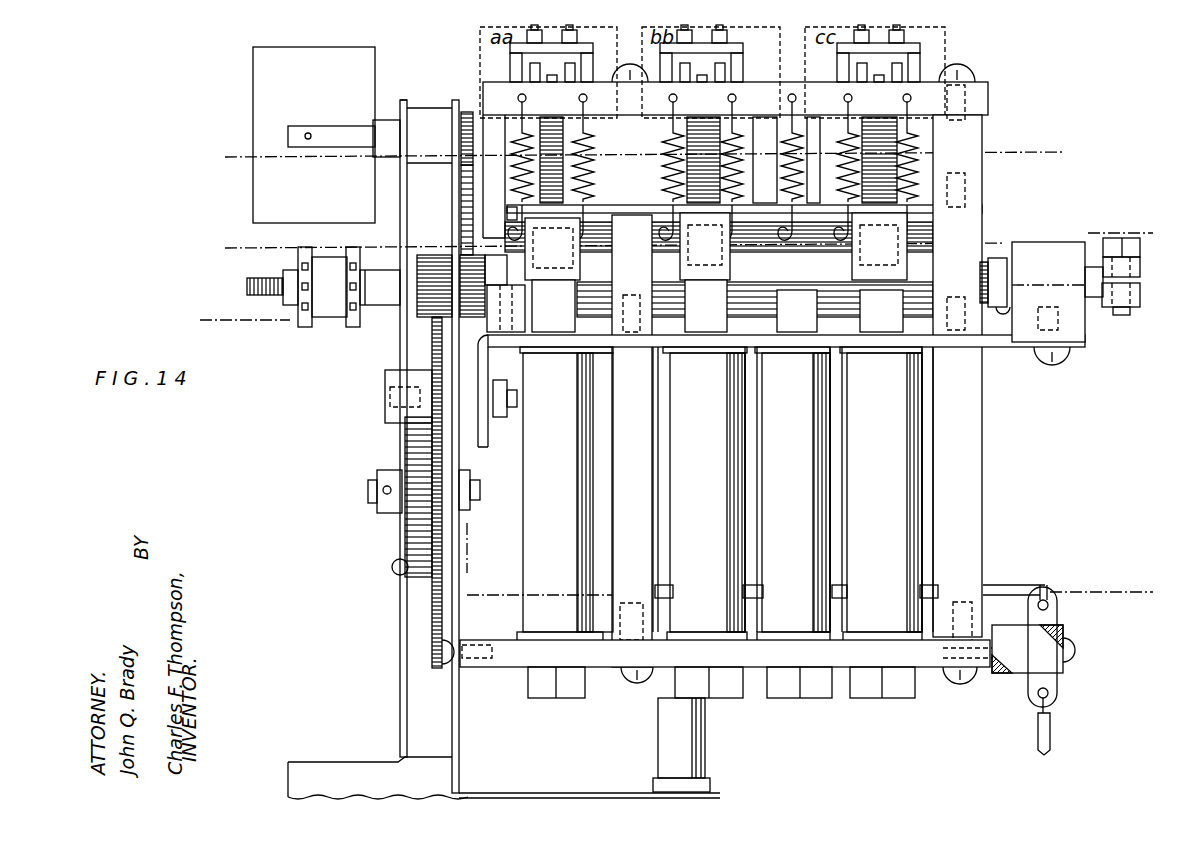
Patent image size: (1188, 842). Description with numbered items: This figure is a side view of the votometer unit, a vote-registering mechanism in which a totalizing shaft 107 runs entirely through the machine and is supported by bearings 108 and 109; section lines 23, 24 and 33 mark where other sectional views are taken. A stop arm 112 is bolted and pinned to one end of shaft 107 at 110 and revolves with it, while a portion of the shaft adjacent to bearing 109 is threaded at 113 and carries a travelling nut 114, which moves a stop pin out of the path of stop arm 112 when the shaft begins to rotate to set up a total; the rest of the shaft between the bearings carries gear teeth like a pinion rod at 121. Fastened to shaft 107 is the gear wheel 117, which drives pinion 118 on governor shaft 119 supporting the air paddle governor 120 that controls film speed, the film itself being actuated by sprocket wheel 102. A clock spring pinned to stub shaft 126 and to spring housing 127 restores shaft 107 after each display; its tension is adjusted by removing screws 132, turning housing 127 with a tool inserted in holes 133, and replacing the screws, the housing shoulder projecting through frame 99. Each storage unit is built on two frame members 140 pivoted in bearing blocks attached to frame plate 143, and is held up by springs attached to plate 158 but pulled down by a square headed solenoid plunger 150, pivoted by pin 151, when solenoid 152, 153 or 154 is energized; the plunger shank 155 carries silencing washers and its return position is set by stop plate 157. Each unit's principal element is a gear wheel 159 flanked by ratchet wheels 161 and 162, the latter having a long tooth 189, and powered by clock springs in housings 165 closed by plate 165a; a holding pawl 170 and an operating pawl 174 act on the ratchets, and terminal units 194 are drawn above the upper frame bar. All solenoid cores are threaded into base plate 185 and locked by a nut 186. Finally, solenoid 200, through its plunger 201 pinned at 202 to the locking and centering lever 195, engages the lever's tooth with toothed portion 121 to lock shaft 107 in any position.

The section line 23— 23 is at (218, 120).
The section line 24— 24 is at (218, 208).
The section line 33 is at (218, 293).
The frame 99 is at (407, 730).
The sprocket wheel 102 is at (323, 312).
The totalizing shaft 107 is at (262, 305).
The bearing 108 is at (488, 265).
The bearing 109 is at (1033, 253).
The bolt 110 is at (1128, 240).
The stop arm 112 is at (1130, 297).
The threaded portion 113 is at (982, 262).
The travelling nut 114 is at (1000, 310).
The gear wheel 117 is at (468, 173).
The pinion 118 is at (466, 102).
The governor shaft 119 is at (336, 128).
The governor 120 is at (256, 90).
The pinion rod toothed portion 121 is at (927, 313).
The stub shaft 126 is at (368, 495).
The spring housing 127 is at (386, 510).
The screws 132 is at (390, 432).
The holes 133 is at (388, 473).
The frame member 140 is at (585, 262).
The frame plate 143 is at (1078, 340).
The solenoid plunger 150 is at (652, 292).
The pin 151 is at (794, 306).
The solenoid 152 is at (525, 485).
The solenoid 153 is at (672, 459).
The solenoid 154 is at (848, 456).
The shank 155 is at (913, 167).
The stop plate 157 is at (967, 207).
The plate 158 is at (982, 103).
The gear wheel 159 is at (887, 110).
The ratchet wheel 161 is at (860, 112).
The ratchet wheel 162 is at (905, 130).
The spring housing 165 is at (487, 117).
The plate 165a is at (488, 84).
The holding pawl 170 is at (714, 110).
The operating pawl 174 is at (605, 80).
The base plate 185 is at (503, 662).
The nut 186 is at (870, 690).
The long tooth 189 is at (432, 622).
The terminal unit 194 is at (585, 88).
The locking and centering lever 195 is at (820, 250).
The solenoid 200 is at (770, 490).
The plunger 201 is at (797, 322).
The pin 202 is at (762, 255).